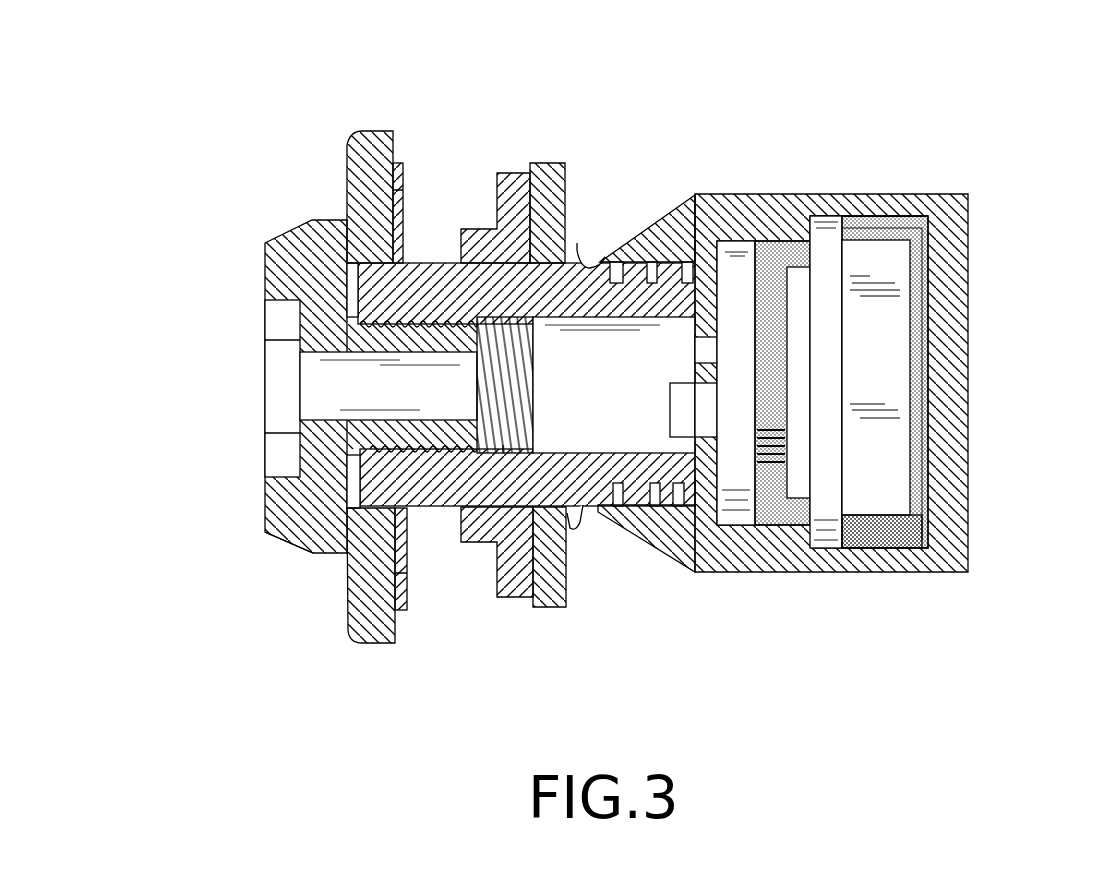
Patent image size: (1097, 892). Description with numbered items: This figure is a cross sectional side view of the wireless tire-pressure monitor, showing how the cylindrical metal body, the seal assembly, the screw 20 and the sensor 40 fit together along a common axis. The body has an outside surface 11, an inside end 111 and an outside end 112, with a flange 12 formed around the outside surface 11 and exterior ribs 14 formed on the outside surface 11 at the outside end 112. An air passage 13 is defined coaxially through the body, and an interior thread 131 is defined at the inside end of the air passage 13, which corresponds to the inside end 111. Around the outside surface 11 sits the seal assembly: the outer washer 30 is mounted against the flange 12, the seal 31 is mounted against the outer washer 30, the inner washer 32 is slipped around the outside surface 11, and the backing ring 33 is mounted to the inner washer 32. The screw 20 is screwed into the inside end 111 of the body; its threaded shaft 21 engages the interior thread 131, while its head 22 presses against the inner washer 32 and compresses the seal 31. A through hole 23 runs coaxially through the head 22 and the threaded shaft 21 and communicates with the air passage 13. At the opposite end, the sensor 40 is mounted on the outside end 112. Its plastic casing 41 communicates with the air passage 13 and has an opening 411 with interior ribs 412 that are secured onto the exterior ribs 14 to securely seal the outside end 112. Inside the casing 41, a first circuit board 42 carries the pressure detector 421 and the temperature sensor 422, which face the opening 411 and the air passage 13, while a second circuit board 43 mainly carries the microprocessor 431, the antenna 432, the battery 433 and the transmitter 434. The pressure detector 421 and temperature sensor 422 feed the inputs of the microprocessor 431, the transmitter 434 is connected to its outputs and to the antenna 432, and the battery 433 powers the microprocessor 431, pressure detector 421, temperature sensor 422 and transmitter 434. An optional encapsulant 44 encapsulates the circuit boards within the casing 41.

The outside surface 11 is at (422, 263).
The inside end 111 is at (360, 477).
The outside end 112 is at (697, 477).
The flange 12 is at (582, 528).
The air passage 13 is at (604, 452).
The interior thread 131 is at (503, 445).
The exterior ribs 14 is at (628, 255).
The screw 20 is at (277, 215).
The threaded shaft 21 is at (425, 430).
The head 22 is at (288, 532).
The through hole 23 is at (365, 420).
The outer washer 30 is at (558, 162).
The seal 31 is at (514, 185).
The inner washer 32 is at (372, 130).
The backing ring 33 is at (405, 165).
The sensor 40 is at (828, 183).
The casing 41 is at (908, 205).
The opening 411 is at (577, 243).
The interior ribs 412 is at (688, 194).
The first circuit board 42 is at (745, 518).
The pressure detector 421 is at (670, 410).
The temperature sensor 422 is at (690, 350).
The second circuit board 43 is at (828, 540).
The microprocessor 431 is at (797, 492).
The antenna 432 is at (923, 273).
The battery 433 is at (885, 442).
The transmitter 434 is at (800, 313).
The encapsulant 44 is at (885, 535).